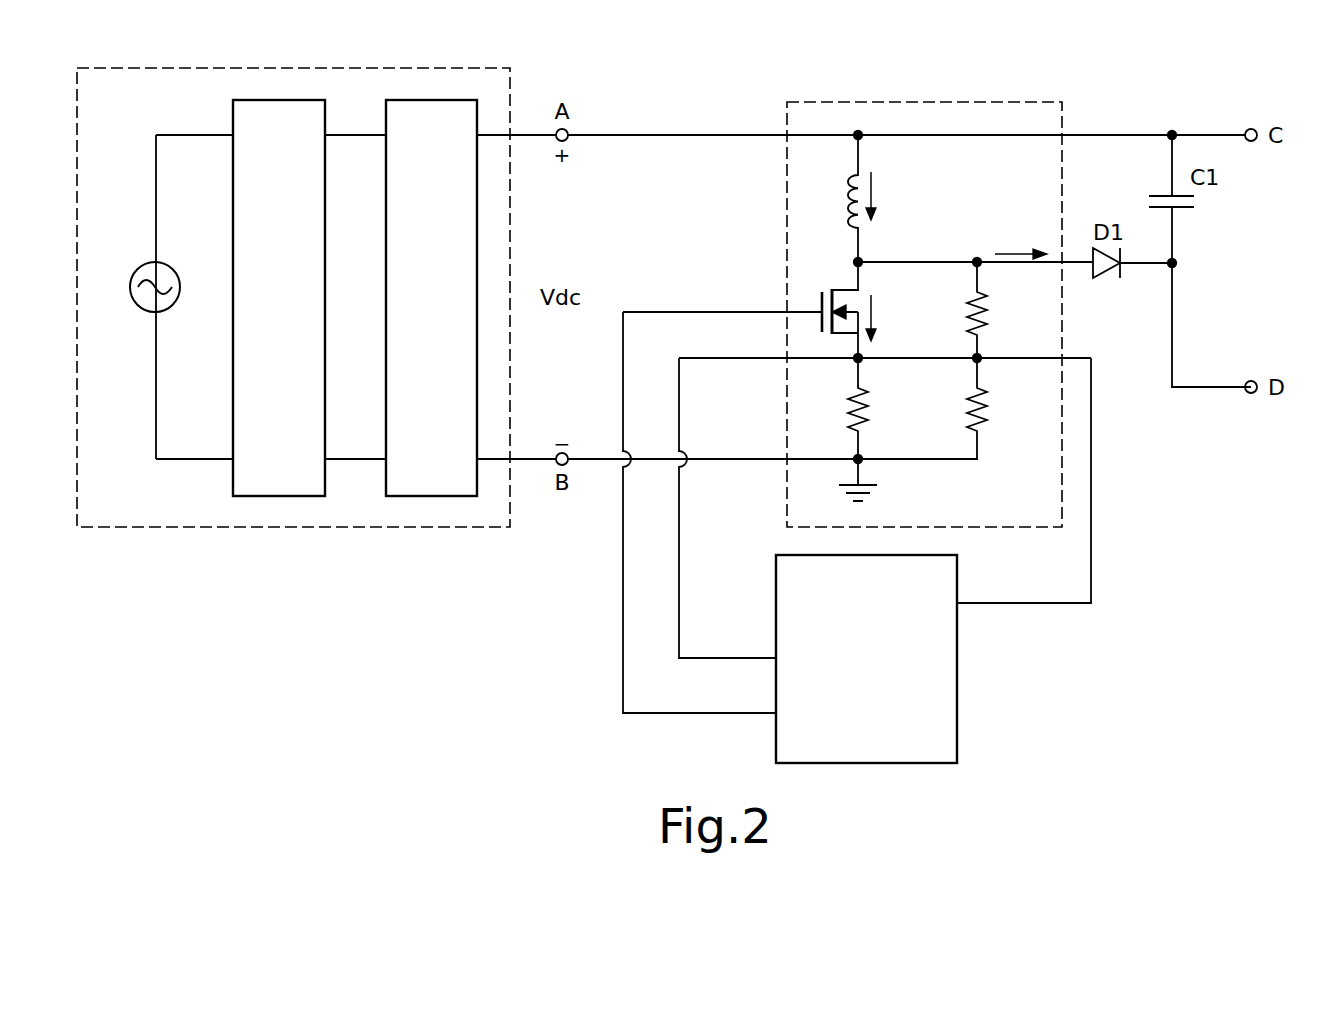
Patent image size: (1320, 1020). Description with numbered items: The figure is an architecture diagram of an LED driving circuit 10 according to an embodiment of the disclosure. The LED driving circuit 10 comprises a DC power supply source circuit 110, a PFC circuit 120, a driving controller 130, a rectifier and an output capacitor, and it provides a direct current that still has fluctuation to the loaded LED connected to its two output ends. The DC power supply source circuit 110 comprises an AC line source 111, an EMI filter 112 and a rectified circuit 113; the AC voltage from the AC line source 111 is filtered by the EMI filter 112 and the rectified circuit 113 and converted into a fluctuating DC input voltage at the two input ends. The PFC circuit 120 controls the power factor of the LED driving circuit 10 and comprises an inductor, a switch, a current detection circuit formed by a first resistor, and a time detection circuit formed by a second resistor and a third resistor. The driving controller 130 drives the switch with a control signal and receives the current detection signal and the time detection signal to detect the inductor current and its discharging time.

The LED driving circuit 10 is at (1243, 711).
The DC power supply source circuit 110 is at (412, 68).
The AC line source 111 is at (136, 270).
The EMI filter 112 is at (279, 298).
The rectified circuit 113 is at (431, 298).
The PFC circuit 120 is at (977, 102).
The driving controller 130 is at (846, 701).